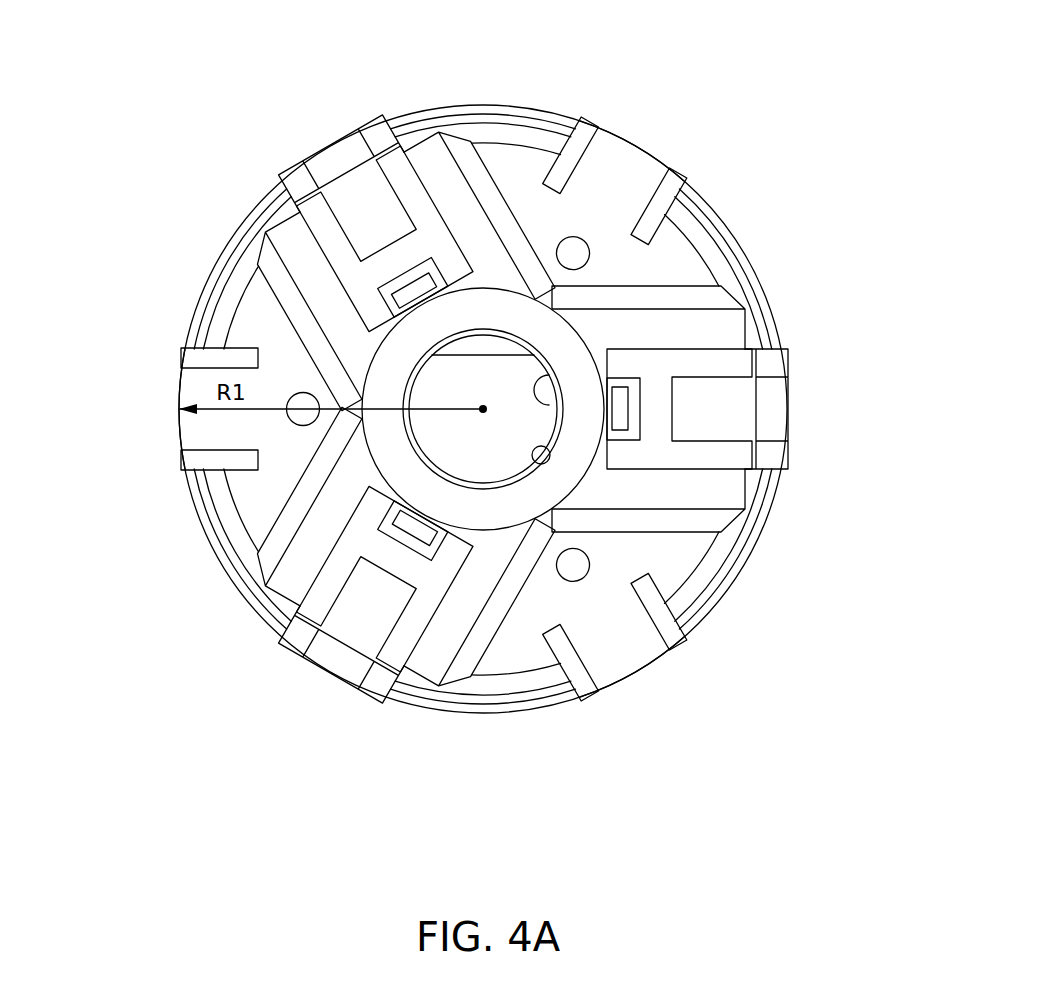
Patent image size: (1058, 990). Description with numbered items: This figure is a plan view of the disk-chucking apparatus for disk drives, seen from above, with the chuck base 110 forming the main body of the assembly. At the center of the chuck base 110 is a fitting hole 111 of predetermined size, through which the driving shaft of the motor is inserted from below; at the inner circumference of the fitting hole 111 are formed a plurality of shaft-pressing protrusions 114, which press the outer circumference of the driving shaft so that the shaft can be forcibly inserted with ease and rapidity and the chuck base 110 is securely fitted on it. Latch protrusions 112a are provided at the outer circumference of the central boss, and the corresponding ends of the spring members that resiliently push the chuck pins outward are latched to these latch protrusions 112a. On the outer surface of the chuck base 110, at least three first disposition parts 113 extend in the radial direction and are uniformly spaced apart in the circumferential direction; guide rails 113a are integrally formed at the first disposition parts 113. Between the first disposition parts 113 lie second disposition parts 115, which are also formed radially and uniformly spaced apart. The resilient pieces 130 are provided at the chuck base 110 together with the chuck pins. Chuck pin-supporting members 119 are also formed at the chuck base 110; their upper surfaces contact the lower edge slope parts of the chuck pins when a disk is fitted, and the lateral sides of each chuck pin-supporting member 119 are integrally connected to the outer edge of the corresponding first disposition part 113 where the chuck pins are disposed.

The chuck base 110 is at (772, 139).
The fitting hole 111 is at (543, 452).
The latch protrusions 112a is at (625, 422).
The first disposition parts 113 is at (360, 217).
The guide rails 113a is at (312, 211).
The shaft-pressing protrusions 114 is at (541, 373).
The second disposition parts 115 is at (668, 193).
The chuck pin-supporting members 119 is at (778, 395).
The resilient pieces 130 is at (617, 160).